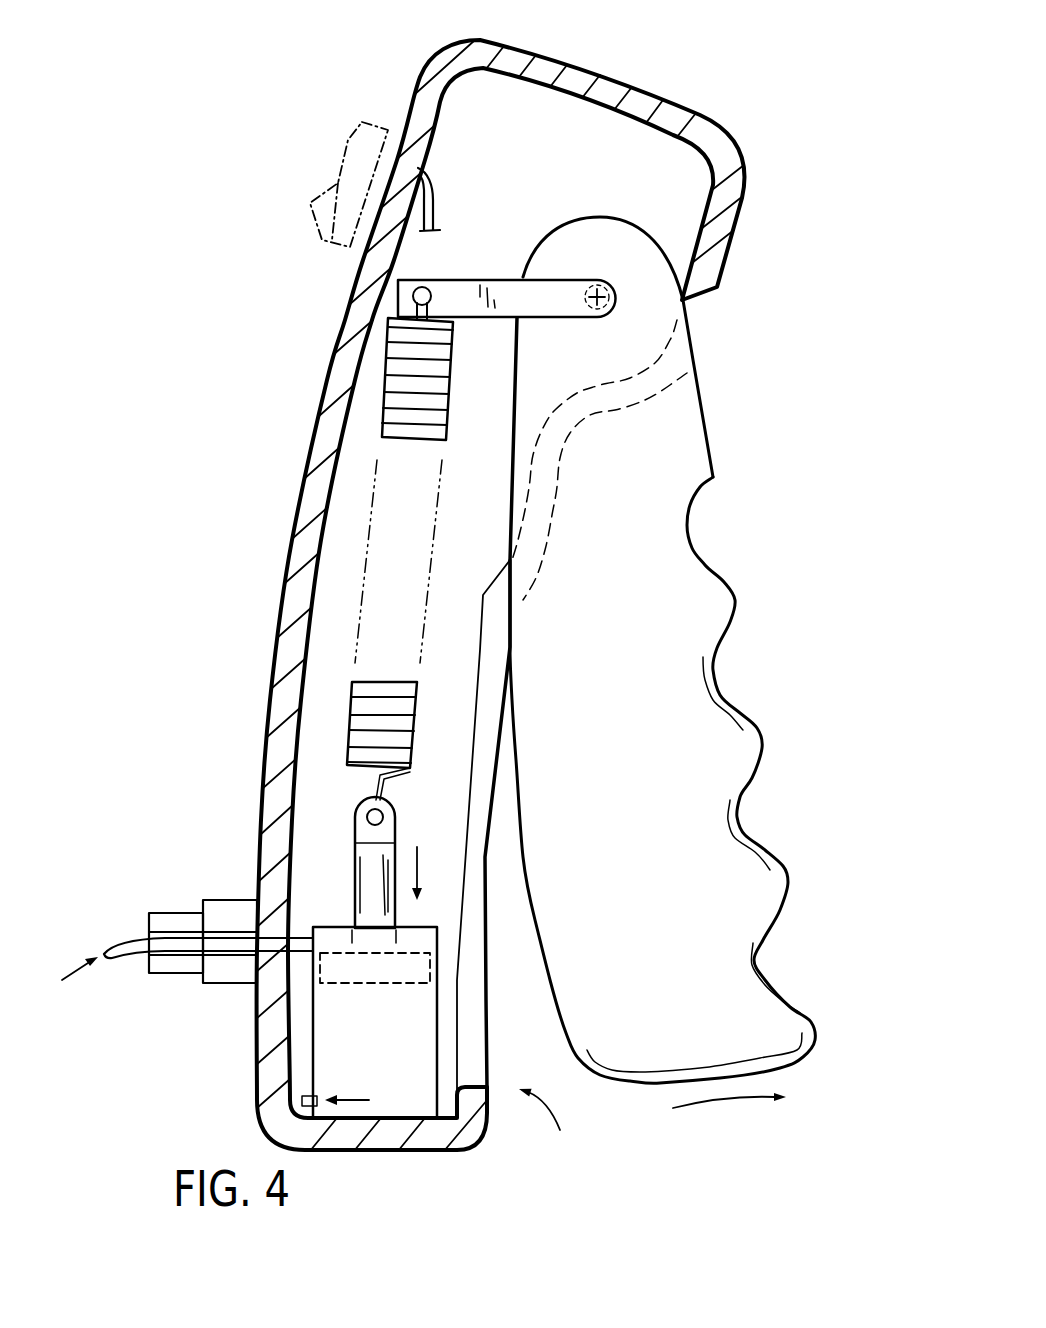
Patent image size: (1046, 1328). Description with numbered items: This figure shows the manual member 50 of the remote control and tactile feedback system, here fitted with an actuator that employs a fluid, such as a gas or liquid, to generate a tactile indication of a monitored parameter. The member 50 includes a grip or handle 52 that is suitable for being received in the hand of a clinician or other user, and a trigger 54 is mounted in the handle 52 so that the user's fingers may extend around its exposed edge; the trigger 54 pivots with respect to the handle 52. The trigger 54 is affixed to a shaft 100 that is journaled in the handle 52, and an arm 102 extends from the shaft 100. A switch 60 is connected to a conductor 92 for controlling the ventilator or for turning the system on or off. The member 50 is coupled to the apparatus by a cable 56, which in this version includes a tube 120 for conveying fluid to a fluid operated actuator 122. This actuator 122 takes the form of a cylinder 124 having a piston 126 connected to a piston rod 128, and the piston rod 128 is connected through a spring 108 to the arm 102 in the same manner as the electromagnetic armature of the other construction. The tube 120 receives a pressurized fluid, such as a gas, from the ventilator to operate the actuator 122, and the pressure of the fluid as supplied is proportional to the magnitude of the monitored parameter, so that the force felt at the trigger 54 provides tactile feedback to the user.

The member 50 is at (322, 282).
The handle 52 is at (266, 712).
The trigger 54 is at (700, 560).
The cable 56 is at (220, 983).
The switch 60 is at (348, 140).
The conductor 92 is at (436, 208).
The shaft 100 is at (602, 290).
The arm 102 is at (470, 277).
The spring 108 is at (385, 366).
The tube 120 is at (111, 938).
The fluid operated actuator 122 is at (652, 1125).
The cylinder 124 is at (308, 1050).
The piston 126 is at (350, 987).
The piston rod 128 is at (345, 873).